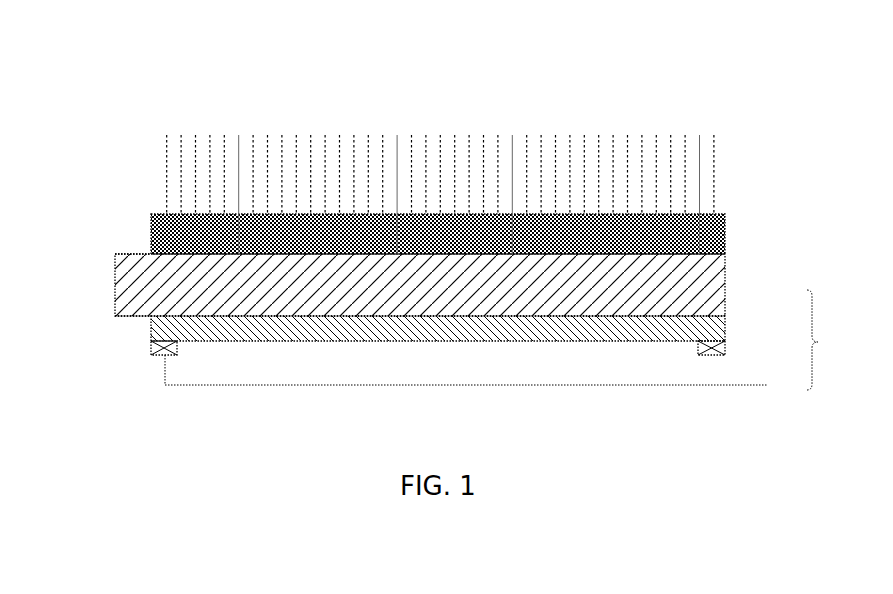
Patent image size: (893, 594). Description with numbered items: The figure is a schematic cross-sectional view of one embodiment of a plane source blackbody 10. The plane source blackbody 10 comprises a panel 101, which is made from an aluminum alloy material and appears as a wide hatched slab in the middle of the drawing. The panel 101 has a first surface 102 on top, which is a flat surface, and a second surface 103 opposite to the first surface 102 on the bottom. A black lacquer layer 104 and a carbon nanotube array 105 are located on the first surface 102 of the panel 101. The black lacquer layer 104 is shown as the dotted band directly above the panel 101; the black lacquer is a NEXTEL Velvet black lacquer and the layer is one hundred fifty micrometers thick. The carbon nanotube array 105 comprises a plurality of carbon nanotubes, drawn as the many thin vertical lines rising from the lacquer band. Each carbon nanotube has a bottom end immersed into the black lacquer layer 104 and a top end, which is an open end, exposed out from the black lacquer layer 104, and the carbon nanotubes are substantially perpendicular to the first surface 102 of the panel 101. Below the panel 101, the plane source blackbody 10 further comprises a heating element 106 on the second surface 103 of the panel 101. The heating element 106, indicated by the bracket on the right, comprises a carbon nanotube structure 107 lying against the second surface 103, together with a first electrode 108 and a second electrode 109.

The plane source blackbody 10 is at (419, 82).
The panel 101 is at (130, 278).
The first surface 102 is at (128, 252).
The second surface 103 is at (127, 318).
The black lacquer layer 104 is at (725, 226).
The carbon nanotube array 105 is at (703, 162).
The heating element 106 is at (838, 340).
The carbon nanotube structure 107 is at (710, 304).
The first electrode 108 is at (720, 349).
The second electrode 109 is at (486, 377).